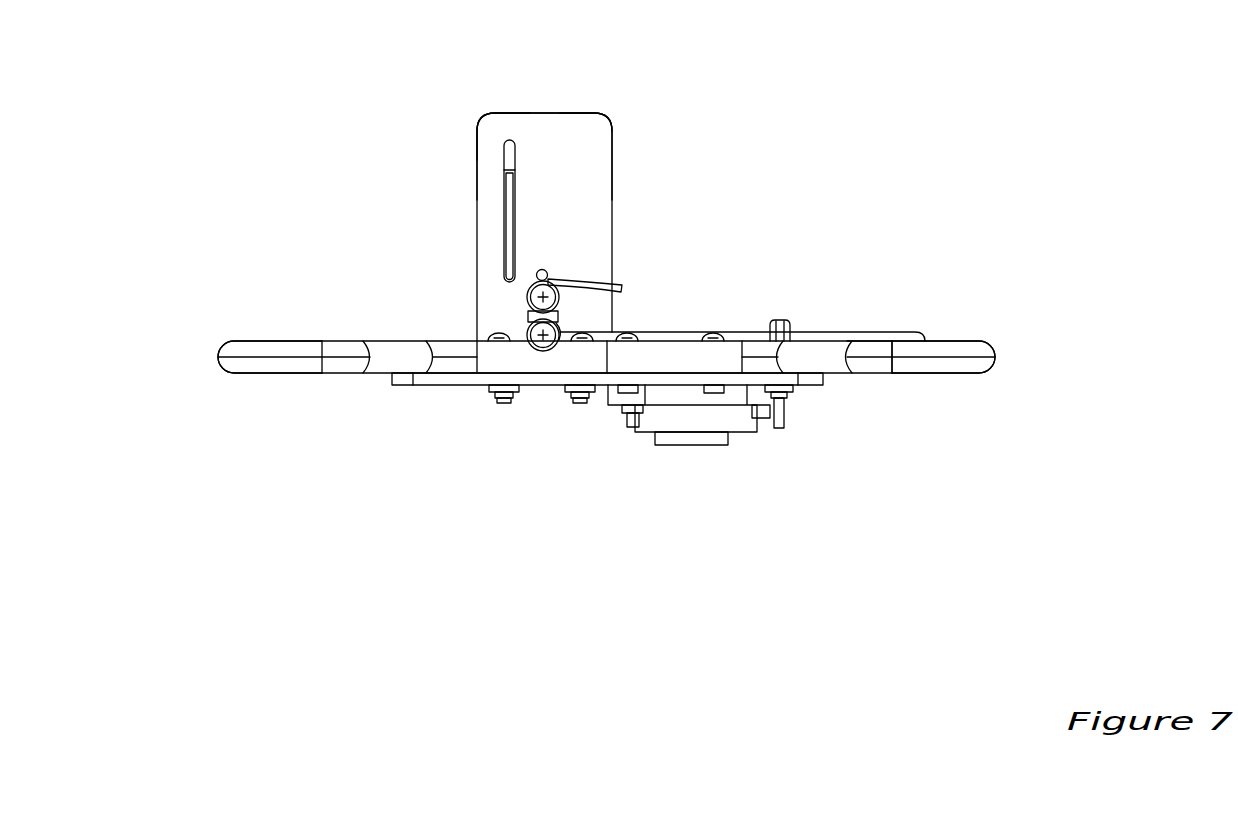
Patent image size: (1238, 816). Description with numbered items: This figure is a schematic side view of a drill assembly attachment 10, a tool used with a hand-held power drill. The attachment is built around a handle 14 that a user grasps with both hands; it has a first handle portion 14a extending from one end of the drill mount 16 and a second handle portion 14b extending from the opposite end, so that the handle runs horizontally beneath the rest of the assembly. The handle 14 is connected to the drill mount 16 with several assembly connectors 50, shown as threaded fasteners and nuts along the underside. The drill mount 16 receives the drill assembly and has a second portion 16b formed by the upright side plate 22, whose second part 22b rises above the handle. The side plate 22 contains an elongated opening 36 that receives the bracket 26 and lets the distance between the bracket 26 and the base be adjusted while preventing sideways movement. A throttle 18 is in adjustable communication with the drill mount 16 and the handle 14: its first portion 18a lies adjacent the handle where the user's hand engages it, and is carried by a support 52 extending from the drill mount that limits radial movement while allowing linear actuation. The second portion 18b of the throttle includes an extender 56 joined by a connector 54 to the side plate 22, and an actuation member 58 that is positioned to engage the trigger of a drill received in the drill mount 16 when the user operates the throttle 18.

The drill assembly attachment 10 is at (205, 112).
The handle 14 is at (233, 343).
The first handle portion 14a is at (980, 345).
The second handle portion 14b is at (237, 370).
The drill mount 16 is at (455, 184).
The second portion of drill mount 16b is at (630, 133).
The throttle 18 is at (714, 310).
The first portion of throttle 18a is at (890, 323).
The second portion of throttle 18b is at (544, 263).
The side plate 22 is at (552, 120).
The second part of side plate 22b is at (490, 122).
The bracket 26 is at (508, 237).
The opening 36 is at (508, 158).
The assembly connectors 50 is at (500, 400).
The support 52 is at (785, 320).
The connector 54 is at (535, 328).
The extender 56 is at (556, 318).
The actuation member 58 is at (623, 285).